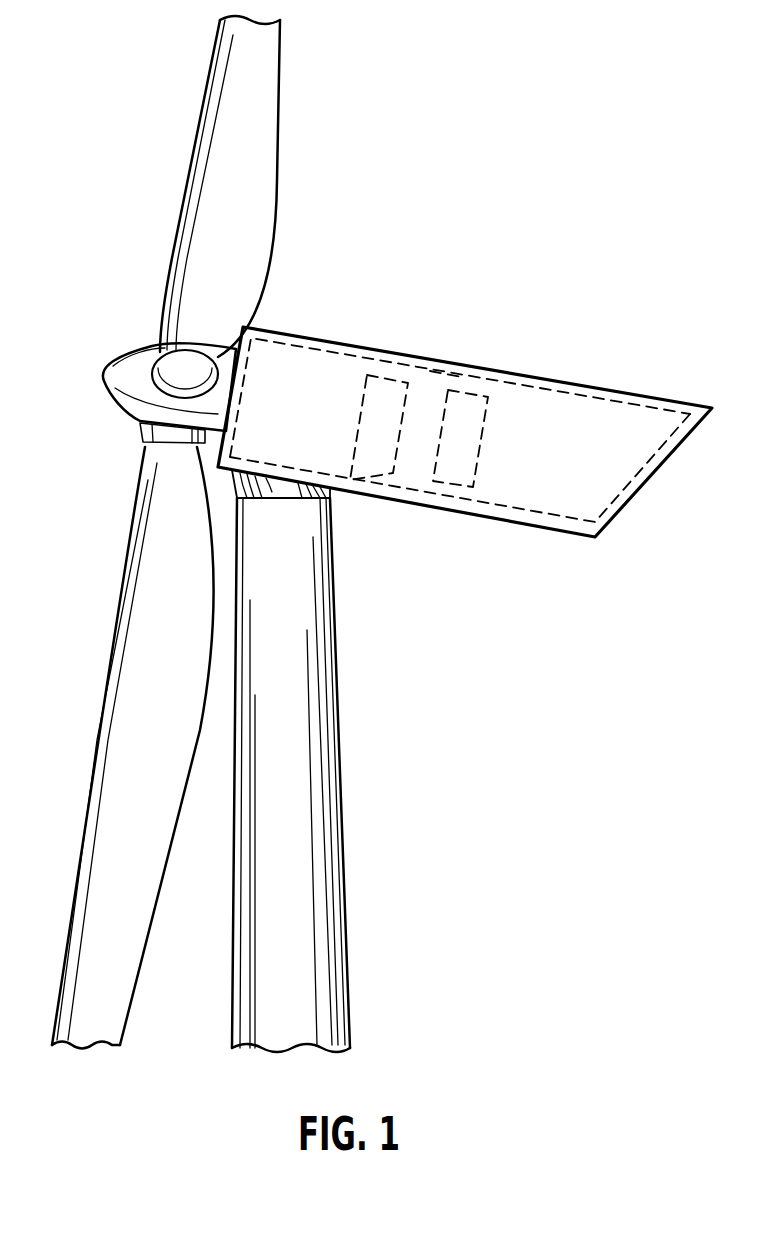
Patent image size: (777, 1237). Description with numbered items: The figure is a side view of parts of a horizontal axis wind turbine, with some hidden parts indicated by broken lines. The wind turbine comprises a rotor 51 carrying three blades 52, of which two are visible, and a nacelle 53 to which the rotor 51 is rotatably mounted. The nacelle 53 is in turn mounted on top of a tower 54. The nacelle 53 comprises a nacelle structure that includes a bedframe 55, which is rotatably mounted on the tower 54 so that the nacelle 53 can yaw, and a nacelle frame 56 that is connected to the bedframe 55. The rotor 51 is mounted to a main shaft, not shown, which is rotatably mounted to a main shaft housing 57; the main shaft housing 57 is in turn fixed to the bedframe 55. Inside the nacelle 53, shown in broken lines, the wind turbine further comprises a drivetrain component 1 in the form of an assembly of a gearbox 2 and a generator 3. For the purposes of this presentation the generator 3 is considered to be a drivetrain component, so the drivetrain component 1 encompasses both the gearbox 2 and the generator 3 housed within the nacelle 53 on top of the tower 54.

The drivetrain component 1 is at (448, 372).
The gearbox 2 is at (423, 383).
The generator 3 is at (471, 390).
The rotor 51 is at (102, 323).
The blades 52 is at (190, 170).
The nacelle 53 is at (633, 392).
The tower 54 is at (335, 762).
The bedframe 55 is at (330, 493).
The nacelle frame 56 is at (565, 521).
The main shaft housing 57 is at (323, 365).